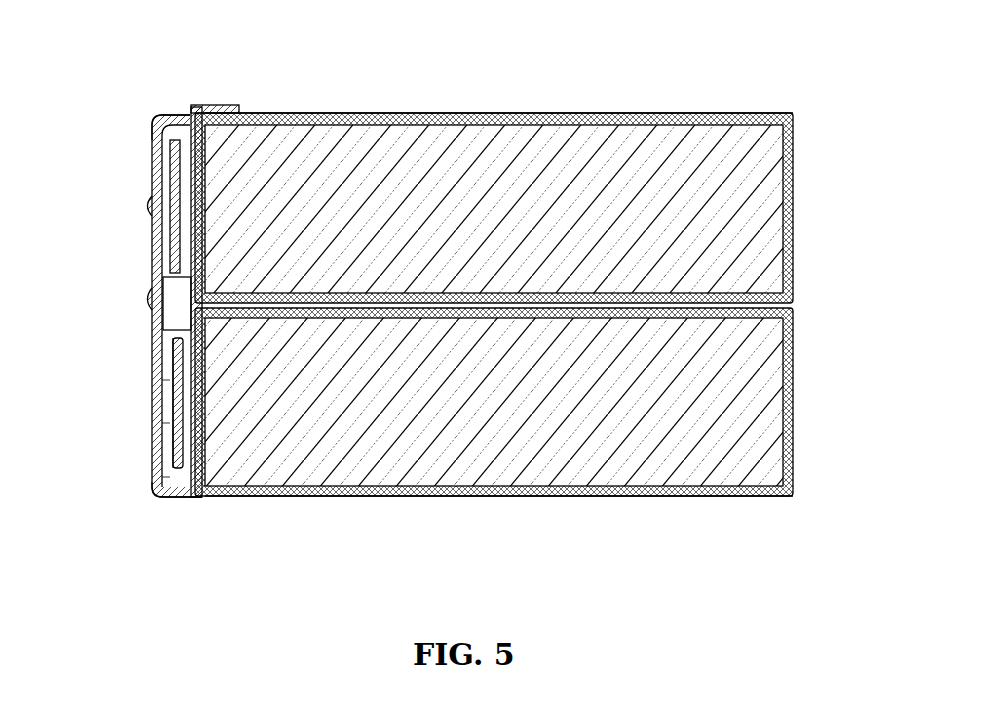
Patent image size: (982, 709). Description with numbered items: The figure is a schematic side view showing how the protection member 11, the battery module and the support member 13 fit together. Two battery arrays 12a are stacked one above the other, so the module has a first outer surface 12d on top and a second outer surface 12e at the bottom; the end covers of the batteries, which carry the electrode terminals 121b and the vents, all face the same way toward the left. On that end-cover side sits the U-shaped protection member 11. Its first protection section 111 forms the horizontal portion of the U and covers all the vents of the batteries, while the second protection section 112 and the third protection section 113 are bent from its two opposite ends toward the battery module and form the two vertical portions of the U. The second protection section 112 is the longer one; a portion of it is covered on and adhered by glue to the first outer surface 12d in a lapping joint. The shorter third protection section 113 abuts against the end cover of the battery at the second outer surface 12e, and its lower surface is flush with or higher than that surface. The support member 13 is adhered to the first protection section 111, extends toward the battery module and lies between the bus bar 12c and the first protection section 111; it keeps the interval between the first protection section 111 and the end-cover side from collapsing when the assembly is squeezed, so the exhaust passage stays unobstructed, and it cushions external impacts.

The protection member 11 is at (148, 357).
The first protection section 111 is at (150, 265).
The second protection section 112 is at (198, 106).
The third protection section 113 is at (178, 497).
The battery array 12a is at (796, 208).
The bus bar 12c is at (168, 112).
The first outer surface 12d is at (382, 113).
The second outer surface 12e is at (390, 497).
The electrode terminal 121b is at (237, 101).
The support member 13 is at (155, 195).